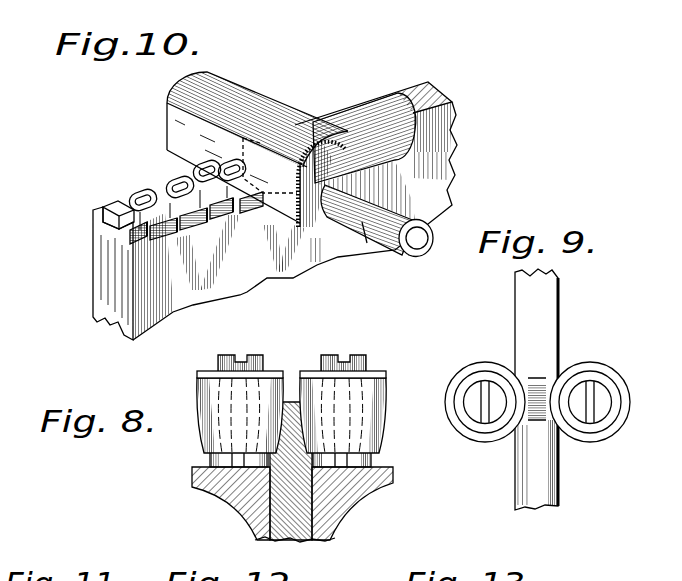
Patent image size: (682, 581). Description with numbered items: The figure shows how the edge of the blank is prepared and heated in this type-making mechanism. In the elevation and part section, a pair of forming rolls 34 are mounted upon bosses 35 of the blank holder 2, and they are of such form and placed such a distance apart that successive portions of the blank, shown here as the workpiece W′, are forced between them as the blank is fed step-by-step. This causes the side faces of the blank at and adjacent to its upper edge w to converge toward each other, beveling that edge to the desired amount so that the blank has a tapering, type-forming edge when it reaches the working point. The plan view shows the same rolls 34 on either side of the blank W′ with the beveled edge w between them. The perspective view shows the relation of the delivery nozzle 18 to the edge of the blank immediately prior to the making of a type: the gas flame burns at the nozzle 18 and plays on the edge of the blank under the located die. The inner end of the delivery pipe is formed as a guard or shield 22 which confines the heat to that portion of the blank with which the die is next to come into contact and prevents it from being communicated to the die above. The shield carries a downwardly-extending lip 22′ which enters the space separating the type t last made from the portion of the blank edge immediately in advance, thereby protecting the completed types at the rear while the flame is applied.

In FIG. 10, the guard or shield 22 is at (257, 107).
In FIG. 10, the downwardly-extending lip 22′ is at (167, 148).
In FIG. 10, the formed type t is at (117, 203).
In FIG. 10, the workpiece W′ is at (113, 277).
In FIG. 8, the workpiece W′ is at (291, 522).
In FIG. 9, the workpiece W′ is at (536, 389).
In FIG. 10, the upper edge of the blank w is at (352, 112).
In FIG. 8, the upper edge of the blank w is at (295, 400).
In FIG. 9, the upper edge of the blank w is at (538, 493).
In FIG. 10, the nozzle 18 is at (365, 226).
In FIG. 8, the forming rolls 34 is at (218, 391).
In FIG. 9, the forming rolls 34 is at (472, 367).
In FIG. 8, the bosses 35 is at (217, 457).
In FIG. 8, the blank holder 2 is at (333, 497).